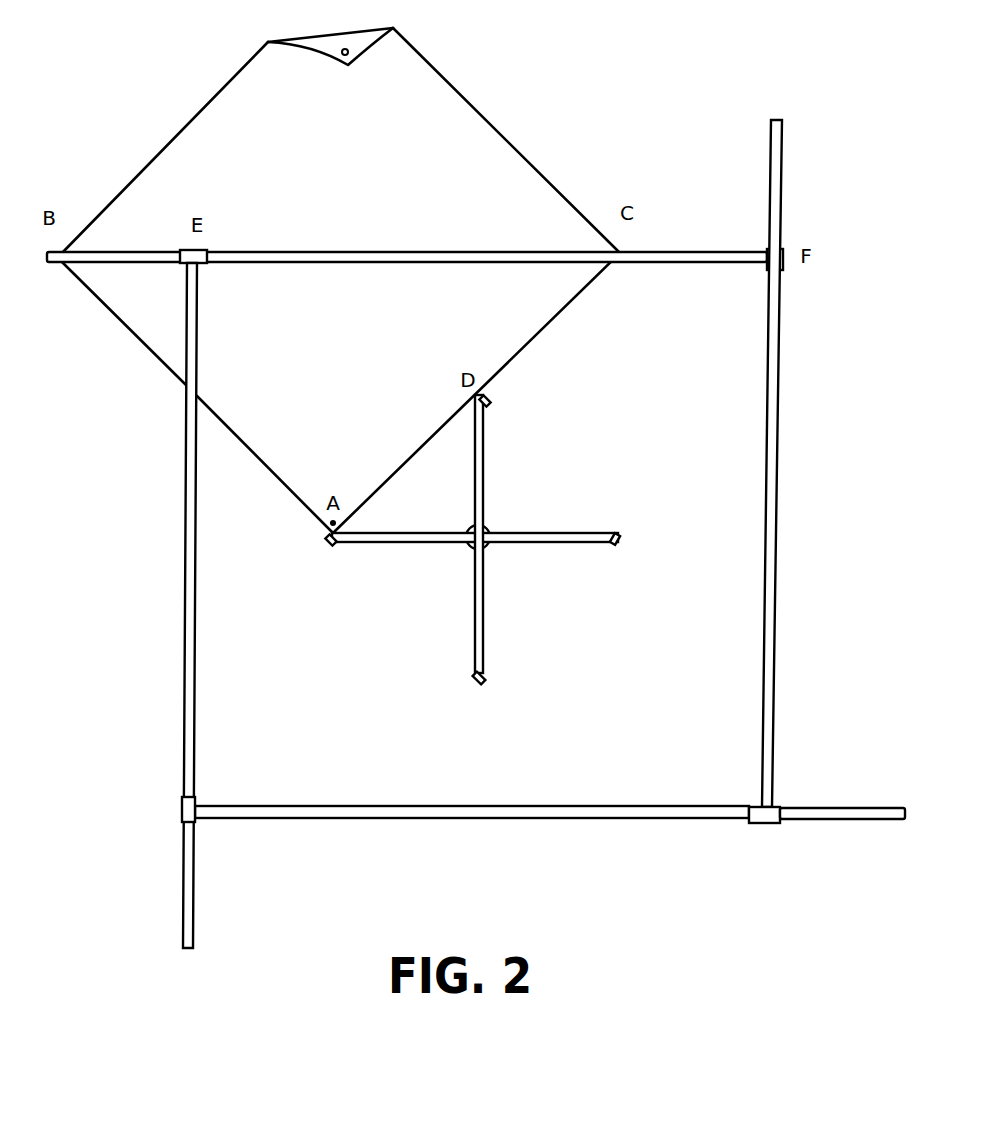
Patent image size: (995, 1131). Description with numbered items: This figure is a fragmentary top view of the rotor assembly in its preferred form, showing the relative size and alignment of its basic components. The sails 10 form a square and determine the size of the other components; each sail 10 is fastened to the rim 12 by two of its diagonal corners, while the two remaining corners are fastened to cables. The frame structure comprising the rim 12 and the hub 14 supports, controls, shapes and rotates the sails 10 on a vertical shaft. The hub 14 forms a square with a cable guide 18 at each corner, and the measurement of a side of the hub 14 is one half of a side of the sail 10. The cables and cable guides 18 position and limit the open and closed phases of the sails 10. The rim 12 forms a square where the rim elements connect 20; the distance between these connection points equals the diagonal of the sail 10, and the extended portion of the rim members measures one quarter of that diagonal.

The sail 10 is at (510, 178).
The rim 12 is at (190, 525).
The hub 14 is at (483, 561).
The cable guide 18 is at (473, 673).
The rim element connection 20 is at (188, 810).